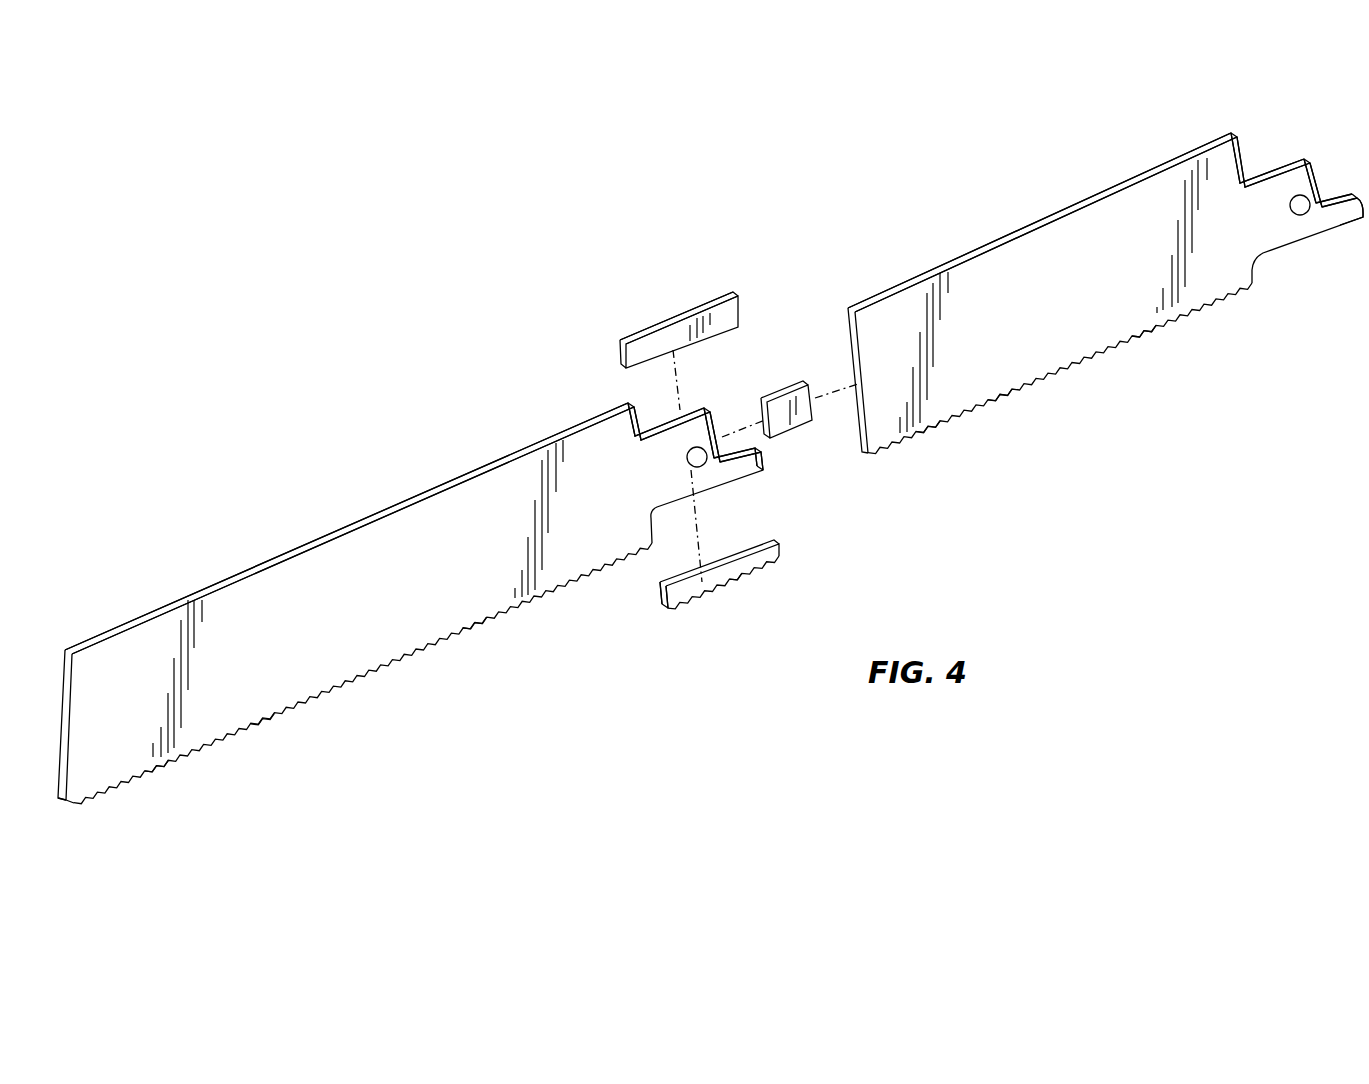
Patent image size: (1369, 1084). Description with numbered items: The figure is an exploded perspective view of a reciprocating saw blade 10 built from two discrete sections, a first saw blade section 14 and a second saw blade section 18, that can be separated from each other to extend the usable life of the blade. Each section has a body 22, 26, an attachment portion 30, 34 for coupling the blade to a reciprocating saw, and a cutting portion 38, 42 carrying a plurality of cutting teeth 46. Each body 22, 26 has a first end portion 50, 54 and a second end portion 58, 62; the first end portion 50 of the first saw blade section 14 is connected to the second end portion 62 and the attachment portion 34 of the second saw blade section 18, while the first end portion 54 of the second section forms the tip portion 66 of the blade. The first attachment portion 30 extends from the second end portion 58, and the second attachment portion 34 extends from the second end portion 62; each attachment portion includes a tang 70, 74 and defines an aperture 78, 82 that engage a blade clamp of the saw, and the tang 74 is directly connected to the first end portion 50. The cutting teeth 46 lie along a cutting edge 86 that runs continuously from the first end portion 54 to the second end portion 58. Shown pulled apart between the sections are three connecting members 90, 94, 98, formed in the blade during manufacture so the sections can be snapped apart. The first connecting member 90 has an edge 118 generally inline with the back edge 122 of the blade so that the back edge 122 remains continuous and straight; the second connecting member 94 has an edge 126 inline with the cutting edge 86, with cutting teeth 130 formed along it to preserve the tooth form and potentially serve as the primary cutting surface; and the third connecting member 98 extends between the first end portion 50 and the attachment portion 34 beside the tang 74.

The saw blade 10 is at (868, 183).
The first saw blade section 14 is at (1080, 268).
The second saw blade section 18 is at (439, 619).
The body 22 is at (1065, 356).
The body 26 is at (336, 655).
The attachment portion 30 is at (1282, 182).
The attachment portion 34 is at (690, 415).
The cutting portion 38 is at (1140, 338).
The cutting portion 42 is at (267, 722).
The cutting teeth 46 is at (176, 757).
The first end portion 50 is at (852, 338).
The first end portion 54 is at (66, 672).
The second end portion 58 is at (1246, 160).
The second end portion 62 is at (643, 405).
The tip portion 66 is at (58, 798).
The tang 70 is at (1352, 218).
The tang 74 is at (757, 470).
The aperture 78 is at (1302, 215).
The aperture 82 is at (700, 463).
The cutting edge 86 is at (480, 640).
The first connecting member 90 is at (671, 303).
The second connecting member 94 is at (660, 590).
The third connecting member 98 is at (800, 422).
The edge 118 is at (665, 322).
The back edge 122 is at (342, 530).
The edge 126 is at (708, 590).
The cutting teeth 130 is at (734, 610).